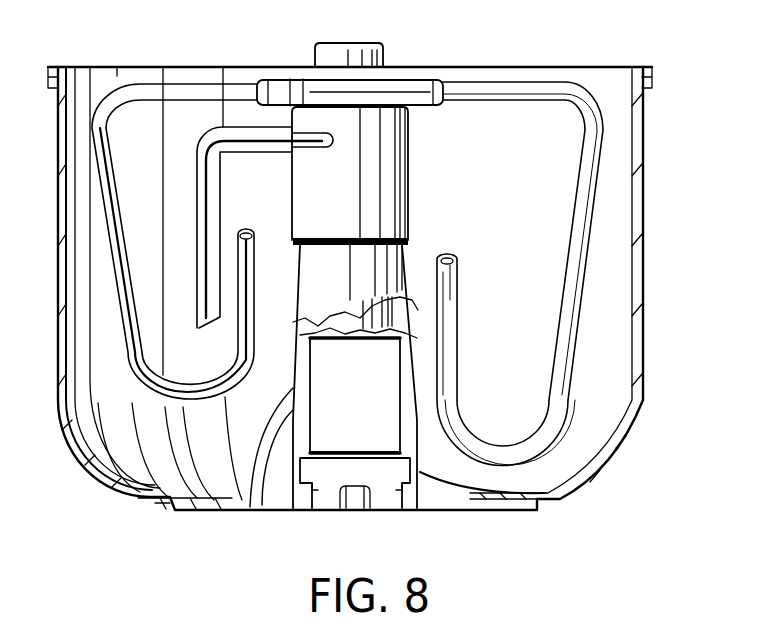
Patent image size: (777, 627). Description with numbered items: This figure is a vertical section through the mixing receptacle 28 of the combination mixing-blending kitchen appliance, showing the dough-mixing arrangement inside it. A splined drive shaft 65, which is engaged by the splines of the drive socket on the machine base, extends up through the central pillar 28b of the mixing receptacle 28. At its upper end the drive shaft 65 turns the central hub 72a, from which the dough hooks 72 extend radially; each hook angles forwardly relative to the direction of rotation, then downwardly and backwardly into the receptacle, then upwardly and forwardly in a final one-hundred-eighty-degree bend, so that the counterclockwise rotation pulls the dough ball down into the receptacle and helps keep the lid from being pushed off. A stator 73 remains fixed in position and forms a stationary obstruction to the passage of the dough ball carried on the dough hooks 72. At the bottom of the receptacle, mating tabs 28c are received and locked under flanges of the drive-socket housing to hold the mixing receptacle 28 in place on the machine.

The mixing receptacle 28 is at (645, 246).
The central pillar 28b is at (251, 513).
The mating tabs 28c is at (392, 494).
The drive shaft 65 is at (347, 338).
The dough hooks 72 is at (580, 219).
The central hub 72a is at (413, 88).
The stator 73 is at (213, 136).